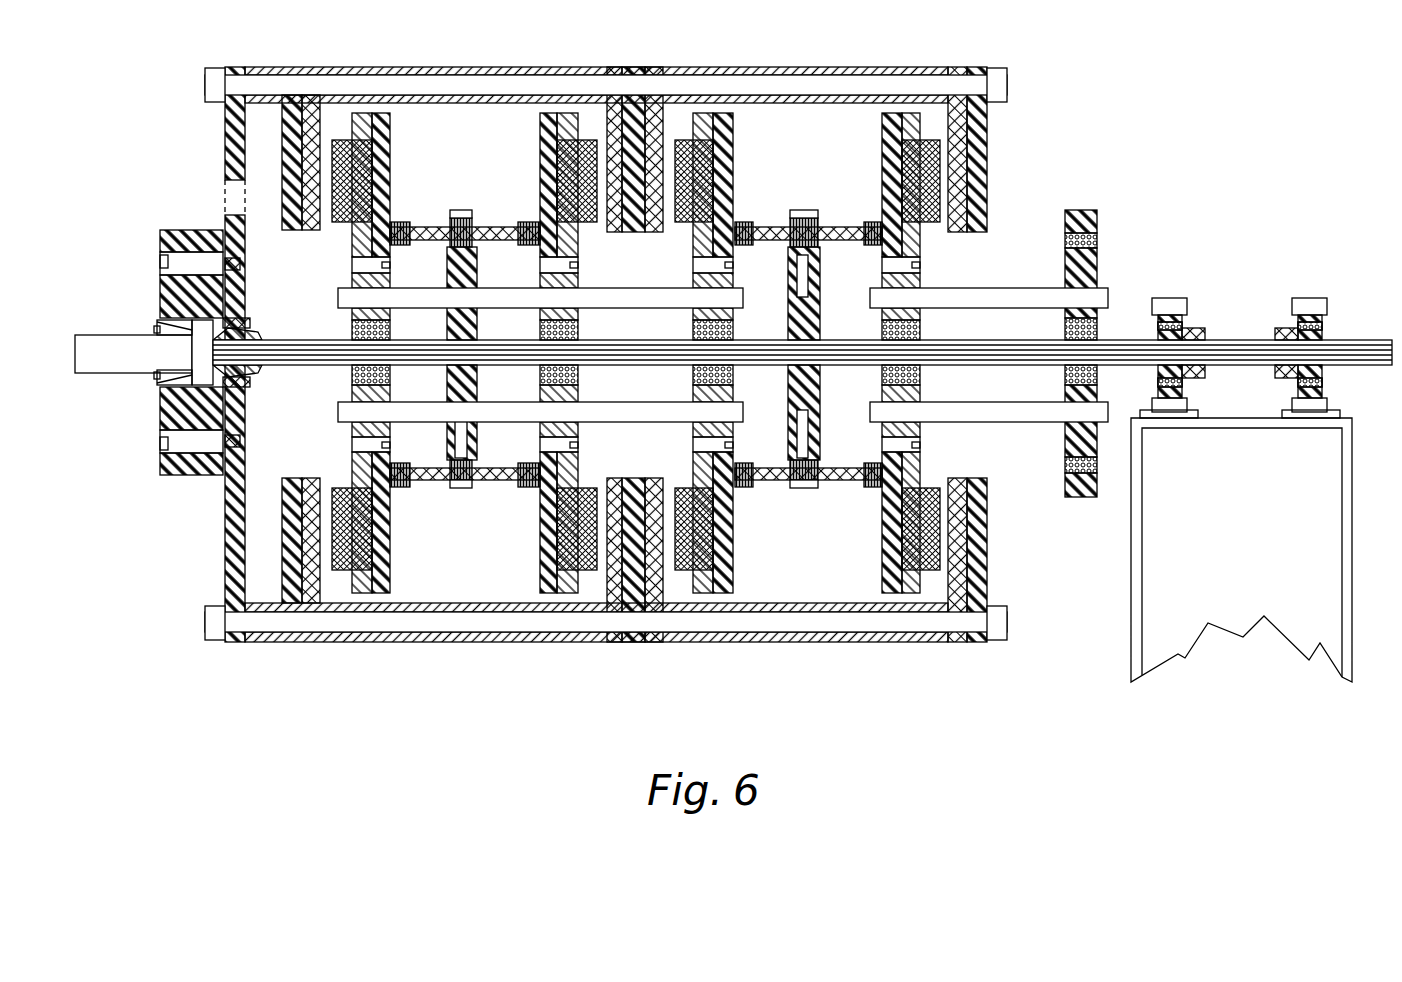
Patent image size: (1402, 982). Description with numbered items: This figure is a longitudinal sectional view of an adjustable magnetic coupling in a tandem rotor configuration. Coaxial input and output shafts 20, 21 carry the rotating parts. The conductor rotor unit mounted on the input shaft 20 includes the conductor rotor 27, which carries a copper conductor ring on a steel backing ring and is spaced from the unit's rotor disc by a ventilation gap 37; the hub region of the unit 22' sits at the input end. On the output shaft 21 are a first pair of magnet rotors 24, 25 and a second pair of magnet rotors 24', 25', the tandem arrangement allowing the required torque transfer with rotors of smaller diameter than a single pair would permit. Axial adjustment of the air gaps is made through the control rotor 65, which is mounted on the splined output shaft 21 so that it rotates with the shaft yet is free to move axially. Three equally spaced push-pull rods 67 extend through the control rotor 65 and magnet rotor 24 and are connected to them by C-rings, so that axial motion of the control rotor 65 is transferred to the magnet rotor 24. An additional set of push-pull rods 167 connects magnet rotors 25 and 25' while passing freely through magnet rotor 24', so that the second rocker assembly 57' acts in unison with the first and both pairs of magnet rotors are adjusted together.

The input shaft 20 is at (110, 342).
The output shaft 21 is at (1357, 343).
The end cap hub 22' is at (211, 324).
The magnet rotor 24 is at (885, 353).
The magnet rotor 24' is at (541, 353).
The magnet rotor 25 is at (394, 353).
The magnet rotor 25' is at (739, 353).
The conductor rotor 27 is at (273, 210).
The ventilation gap 37 is at (255, 110).
The second rocker assembly 57' is at (636, 374).
The control rotor 65 is at (1097, 262).
The push-pull rods 67 is at (1030, 418).
The push-pull rods 167 is at (485, 292).